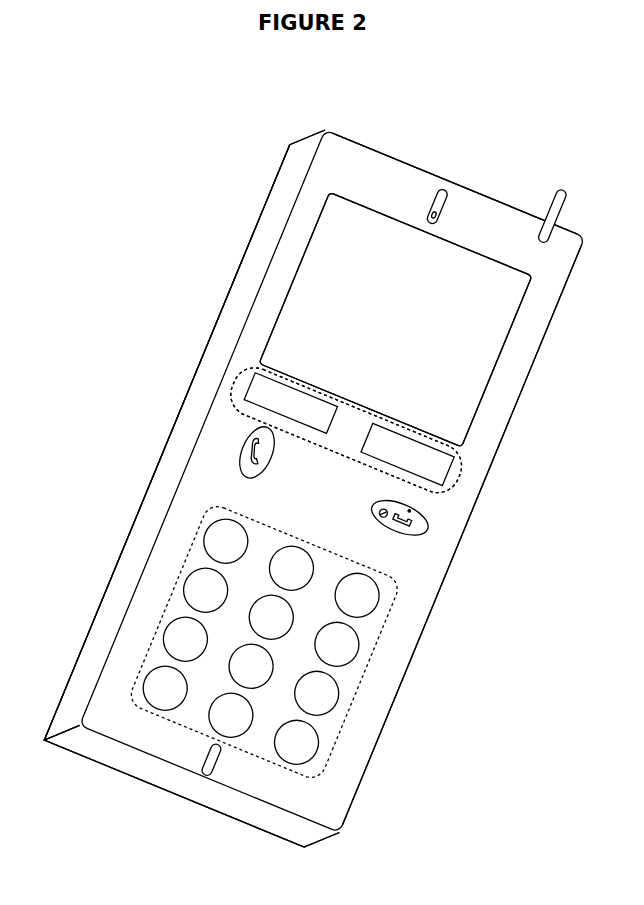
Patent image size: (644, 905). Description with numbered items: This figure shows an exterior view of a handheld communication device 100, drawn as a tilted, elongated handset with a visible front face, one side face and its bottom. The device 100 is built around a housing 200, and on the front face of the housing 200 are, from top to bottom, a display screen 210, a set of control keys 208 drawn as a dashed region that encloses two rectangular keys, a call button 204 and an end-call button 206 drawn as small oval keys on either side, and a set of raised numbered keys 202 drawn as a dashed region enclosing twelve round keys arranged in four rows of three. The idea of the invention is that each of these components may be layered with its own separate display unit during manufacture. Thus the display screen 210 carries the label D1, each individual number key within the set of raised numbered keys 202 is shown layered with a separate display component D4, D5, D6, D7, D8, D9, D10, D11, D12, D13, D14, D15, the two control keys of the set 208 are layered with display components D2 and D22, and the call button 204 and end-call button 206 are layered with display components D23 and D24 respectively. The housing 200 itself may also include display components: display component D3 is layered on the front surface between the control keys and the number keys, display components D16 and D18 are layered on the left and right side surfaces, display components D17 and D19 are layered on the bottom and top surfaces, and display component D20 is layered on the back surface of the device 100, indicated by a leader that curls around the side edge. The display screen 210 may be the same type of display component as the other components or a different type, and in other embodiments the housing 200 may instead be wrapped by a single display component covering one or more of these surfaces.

The communication device 100 is at (288, 146).
The housing 200 is at (537, 310).
The set of raised numbered keys 202 is at (358, 686).
The call button 204 is at (242, 449).
The end-call button 206 is at (430, 519).
The set of control keys 208 is at (458, 473).
The display screen 210 is at (475, 353).
The display region D1 is at (395, 319).
The display component D2 is at (290, 403).
The display component D3 is at (340, 443).
The display component D22 is at (407, 454).
The display component D4 is at (225, 541).
The display component D5 is at (291, 568).
The display component D6 is at (356, 595).
The display component D7 is at (205, 590).
The display component D8 is at (271, 617).
The display component D9 is at (336, 644).
The display component D10 is at (185, 639).
The display component D11 is at (250, 666).
The display component D12 is at (316, 693).
The display component D13 is at (164, 688).
The display component D14 is at (230, 715).
The display component D15 is at (296, 742).
The display component D16 is at (182, 418).
The display component D17 is at (177, 790).
The display component D18 is at (487, 507).
The display component D19 is at (481, 189).
The display component D20 is at (112, 572).
The display component D23 is at (275, 478).
The display component D24 is at (418, 533).